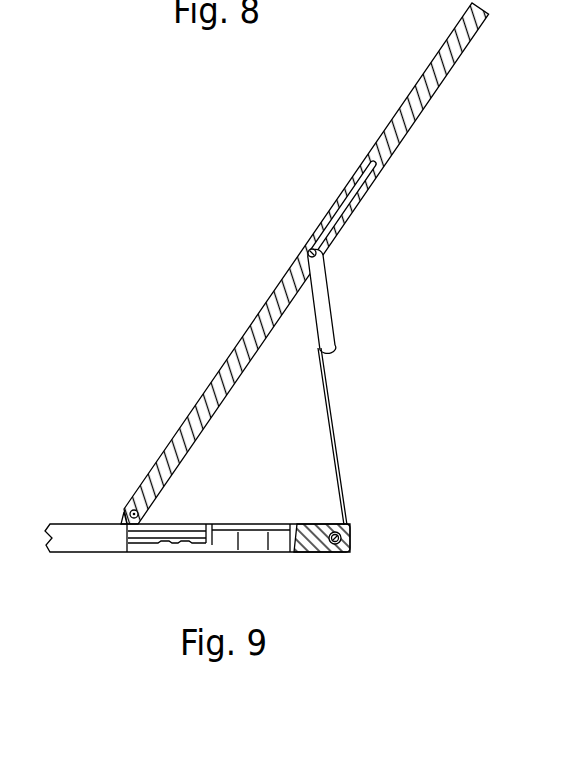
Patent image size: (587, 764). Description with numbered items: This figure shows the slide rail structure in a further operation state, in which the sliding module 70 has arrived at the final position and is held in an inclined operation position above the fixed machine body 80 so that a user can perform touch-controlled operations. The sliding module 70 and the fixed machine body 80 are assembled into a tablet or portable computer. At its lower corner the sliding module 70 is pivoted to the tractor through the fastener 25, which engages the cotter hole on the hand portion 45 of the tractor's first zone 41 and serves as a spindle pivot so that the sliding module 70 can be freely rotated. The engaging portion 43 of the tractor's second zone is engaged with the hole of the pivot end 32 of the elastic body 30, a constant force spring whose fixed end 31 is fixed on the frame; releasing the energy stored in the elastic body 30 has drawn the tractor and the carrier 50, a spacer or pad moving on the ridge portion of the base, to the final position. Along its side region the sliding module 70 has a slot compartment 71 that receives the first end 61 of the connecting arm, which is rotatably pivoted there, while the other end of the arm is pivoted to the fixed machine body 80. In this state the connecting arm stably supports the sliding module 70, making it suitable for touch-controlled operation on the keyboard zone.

The fastener 25 is at (131, 510).
The elastic body 30 is at (228, 522).
The fixed end 31 is at (250, 553).
The pivot end 32 is at (201, 522).
The first zone 41 is at (173, 522).
The engaging portion 43 is at (165, 549).
The hand portion 45 is at (122, 518).
The carrier 50 is at (197, 544).
The first end 61 is at (318, 338).
The sliding module 70 is at (228, 357).
The slot compartment 71 is at (370, 173).
The fixed machine body 80 is at (125, 553).